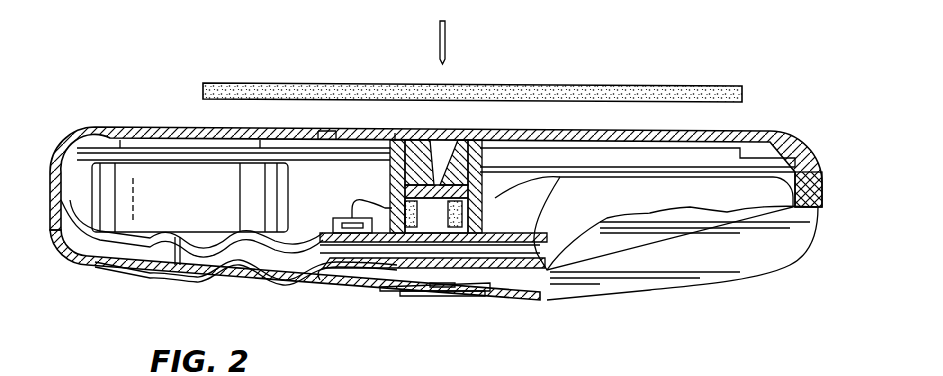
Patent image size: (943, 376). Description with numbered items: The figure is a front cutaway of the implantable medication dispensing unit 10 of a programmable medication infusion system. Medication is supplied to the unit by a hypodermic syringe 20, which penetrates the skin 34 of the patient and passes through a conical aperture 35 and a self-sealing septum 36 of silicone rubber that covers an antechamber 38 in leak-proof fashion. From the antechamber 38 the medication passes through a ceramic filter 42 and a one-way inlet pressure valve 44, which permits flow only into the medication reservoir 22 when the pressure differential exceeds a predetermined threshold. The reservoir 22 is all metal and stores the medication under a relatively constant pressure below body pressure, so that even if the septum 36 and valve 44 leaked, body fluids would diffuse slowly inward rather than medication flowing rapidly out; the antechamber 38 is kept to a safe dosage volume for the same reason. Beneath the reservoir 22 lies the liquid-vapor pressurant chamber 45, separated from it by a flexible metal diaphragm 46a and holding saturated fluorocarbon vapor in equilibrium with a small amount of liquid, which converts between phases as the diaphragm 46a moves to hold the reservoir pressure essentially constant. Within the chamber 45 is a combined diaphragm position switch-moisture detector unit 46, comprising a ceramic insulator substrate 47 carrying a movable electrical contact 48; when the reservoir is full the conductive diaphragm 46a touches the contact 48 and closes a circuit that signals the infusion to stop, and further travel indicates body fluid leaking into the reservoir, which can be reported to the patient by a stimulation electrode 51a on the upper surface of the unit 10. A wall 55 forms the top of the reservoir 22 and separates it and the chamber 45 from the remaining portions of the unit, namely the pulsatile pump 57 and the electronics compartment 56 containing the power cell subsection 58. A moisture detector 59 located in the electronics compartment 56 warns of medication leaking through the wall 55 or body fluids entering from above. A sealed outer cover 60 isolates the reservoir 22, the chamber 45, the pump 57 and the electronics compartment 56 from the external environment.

The medication dispensing unit 10 is at (148, 105).
The hypodermic syringe 20 is at (446, 26).
The skin 34 is at (508, 85).
The stimulation electrode 51a is at (330, 133).
The conical aperture 35 is at (432, 150).
The electronics compartment 56 is at (752, 152).
The outer cover 60 is at (800, 153).
The one-way inlet pressure valve 44 is at (350, 222).
The moisture detector 59 is at (385, 172).
The pulsatile pump 57 is at (190, 197).
The self-sealing septum 36 is at (452, 202).
The antechamber 38 is at (436, 215).
The ceramic filter 42 is at (460, 215).
The power cell subsection 58 is at (656, 238).
The wall 55 is at (283, 252).
The liquid-vapor pressurant chamber 45 is at (337, 276).
The movable electrical contact 48 is at (455, 280).
The flexible diaphragm 46a is at (150, 270).
The medication reservoir 22 is at (280, 275).
The diaphragm position switch-moisture detector unit 46 is at (398, 287).
The ceramic insulator substrate 47 is at (460, 295).